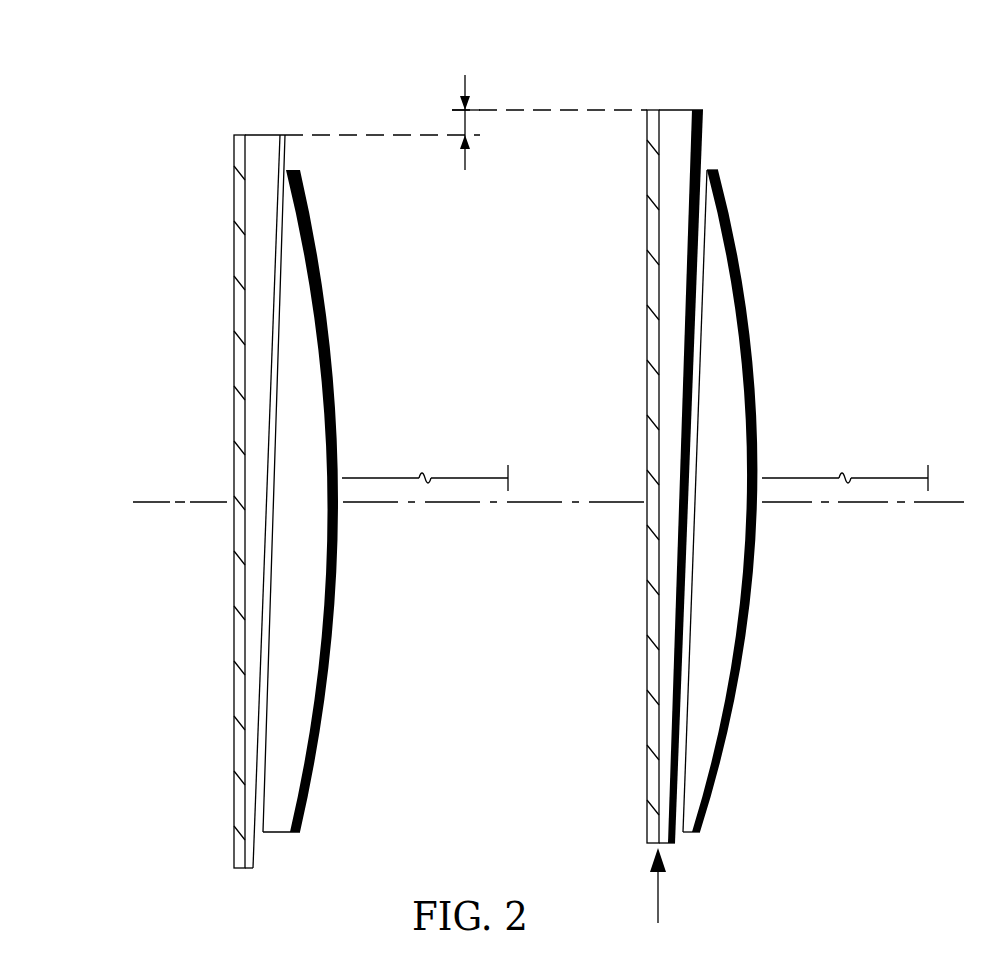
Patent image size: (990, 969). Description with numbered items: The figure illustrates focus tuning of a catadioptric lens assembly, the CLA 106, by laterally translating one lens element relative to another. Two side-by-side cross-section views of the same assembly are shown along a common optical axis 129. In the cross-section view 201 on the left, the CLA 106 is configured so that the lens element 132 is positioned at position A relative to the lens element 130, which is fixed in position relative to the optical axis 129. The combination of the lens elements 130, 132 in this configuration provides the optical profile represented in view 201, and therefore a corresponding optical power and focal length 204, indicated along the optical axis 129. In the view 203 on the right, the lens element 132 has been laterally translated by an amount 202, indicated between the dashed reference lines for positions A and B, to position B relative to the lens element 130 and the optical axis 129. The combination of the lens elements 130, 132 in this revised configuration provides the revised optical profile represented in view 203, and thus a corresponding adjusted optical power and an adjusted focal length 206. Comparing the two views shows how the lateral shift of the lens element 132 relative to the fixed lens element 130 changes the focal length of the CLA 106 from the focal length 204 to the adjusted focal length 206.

The catadioptric lens assembly 106 is at (372, 321).
The optical axis 129 is at (938, 505).
The lens element 130 is at (280, 835).
The lens element 132 is at (262, 145).
The cross-section view 201 is at (308, 78).
The amount of lateral translation 202 is at (462, 87).
The view 203 is at (632, 78).
The focal length 204 is at (468, 478).
The adjusted focal length 206 is at (888, 478).